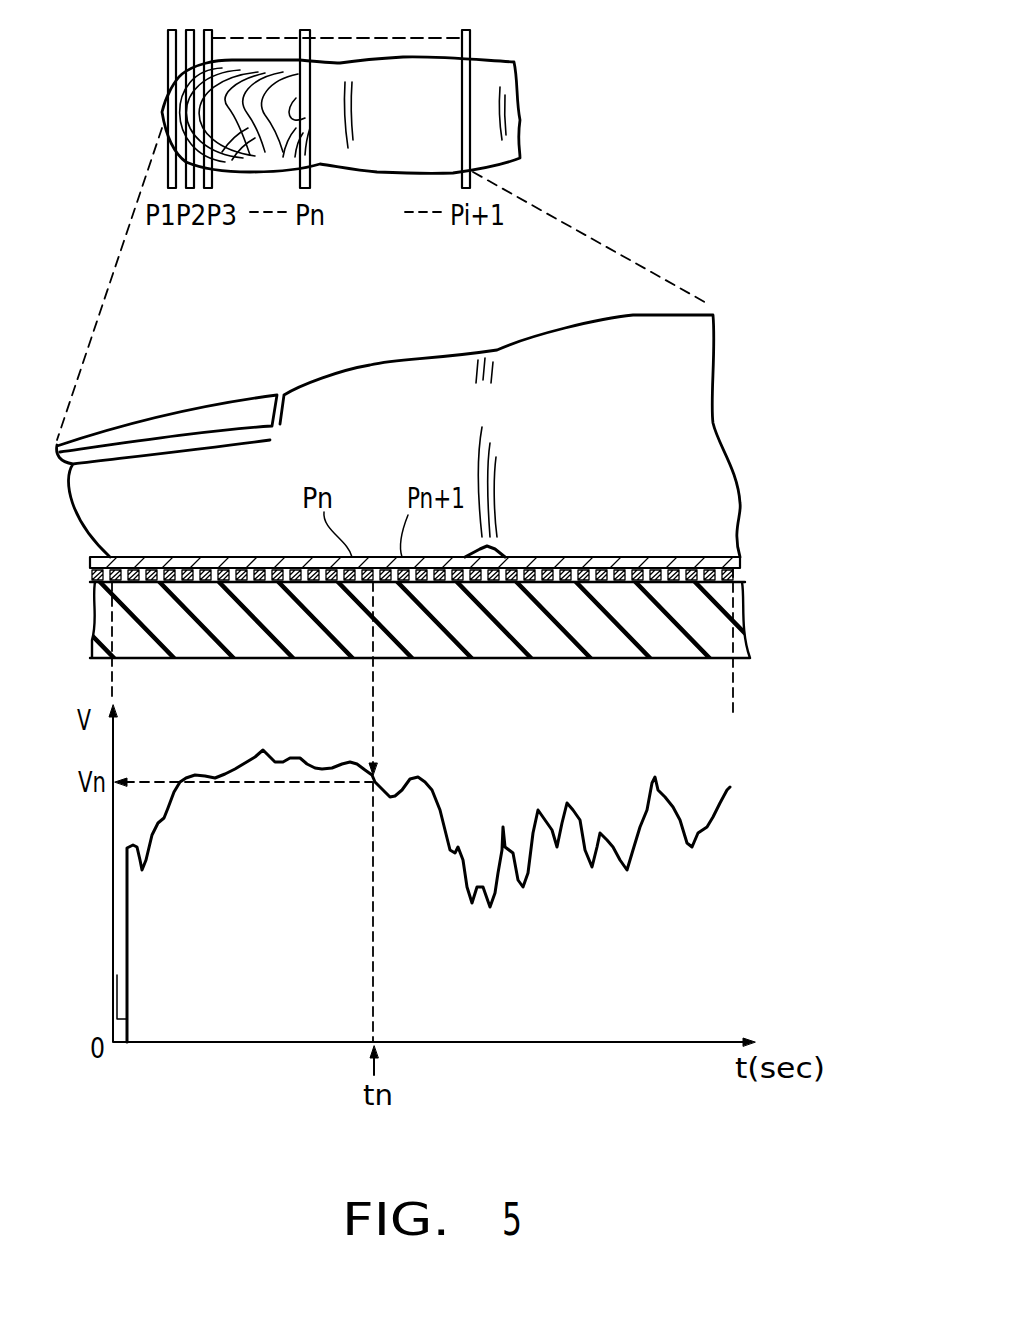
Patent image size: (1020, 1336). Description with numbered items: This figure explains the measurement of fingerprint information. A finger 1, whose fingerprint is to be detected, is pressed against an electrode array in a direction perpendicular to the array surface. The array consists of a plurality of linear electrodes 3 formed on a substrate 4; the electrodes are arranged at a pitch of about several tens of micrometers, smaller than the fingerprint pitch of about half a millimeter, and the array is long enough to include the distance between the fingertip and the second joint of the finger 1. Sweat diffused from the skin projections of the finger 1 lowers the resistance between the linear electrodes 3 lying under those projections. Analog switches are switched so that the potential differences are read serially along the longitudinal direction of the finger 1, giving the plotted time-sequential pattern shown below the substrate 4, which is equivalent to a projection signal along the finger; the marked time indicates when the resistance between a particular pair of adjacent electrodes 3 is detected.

The finger 1 is at (380, 148).
The linear electrodes 3 is at (168, 46).
The substrate 4 is at (713, 620).